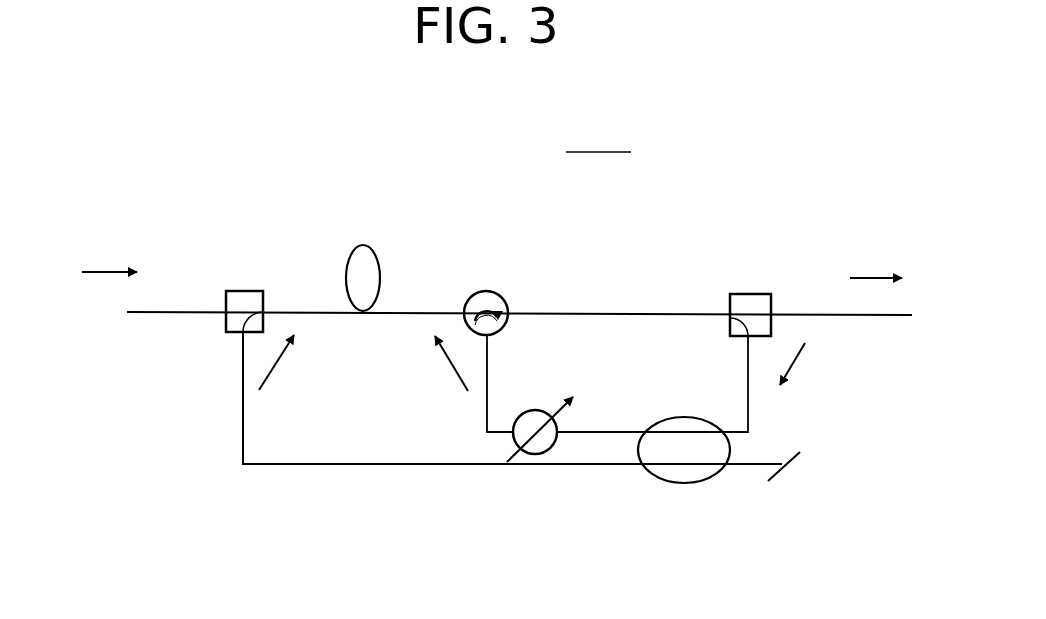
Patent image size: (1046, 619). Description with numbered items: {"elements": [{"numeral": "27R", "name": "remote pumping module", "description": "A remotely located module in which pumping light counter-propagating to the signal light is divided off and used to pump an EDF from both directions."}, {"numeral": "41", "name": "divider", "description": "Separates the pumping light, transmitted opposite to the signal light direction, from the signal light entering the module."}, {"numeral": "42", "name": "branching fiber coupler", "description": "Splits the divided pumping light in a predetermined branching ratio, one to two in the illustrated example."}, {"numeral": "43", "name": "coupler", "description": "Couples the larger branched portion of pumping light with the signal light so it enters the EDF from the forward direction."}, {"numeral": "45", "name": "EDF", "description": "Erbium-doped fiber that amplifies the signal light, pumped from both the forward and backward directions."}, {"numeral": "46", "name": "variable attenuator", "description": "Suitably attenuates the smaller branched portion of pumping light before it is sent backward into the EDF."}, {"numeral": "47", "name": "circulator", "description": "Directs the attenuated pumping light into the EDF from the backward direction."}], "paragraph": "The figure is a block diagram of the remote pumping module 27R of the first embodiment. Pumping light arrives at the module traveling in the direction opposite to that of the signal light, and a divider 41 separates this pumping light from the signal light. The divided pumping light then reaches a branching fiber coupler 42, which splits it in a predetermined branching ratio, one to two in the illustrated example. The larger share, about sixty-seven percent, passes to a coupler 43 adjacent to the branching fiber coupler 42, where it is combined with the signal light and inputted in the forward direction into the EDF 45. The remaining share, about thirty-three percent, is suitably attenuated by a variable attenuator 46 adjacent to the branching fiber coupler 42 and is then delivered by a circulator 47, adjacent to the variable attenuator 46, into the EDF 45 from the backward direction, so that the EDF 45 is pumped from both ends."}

The Raman amplifier unit 27R is at (492, 335).
The pumping light coupler 41 is at (730, 305).
The optical coupler (1:2 splitter) 42 is at (713, 476).
The optical coupler 43 is at (226, 321).
The optical filter / isolator 45 is at (378, 258).
The variable optical attenuator 46 is at (515, 439).
The optical circulator 47 is at (504, 300).